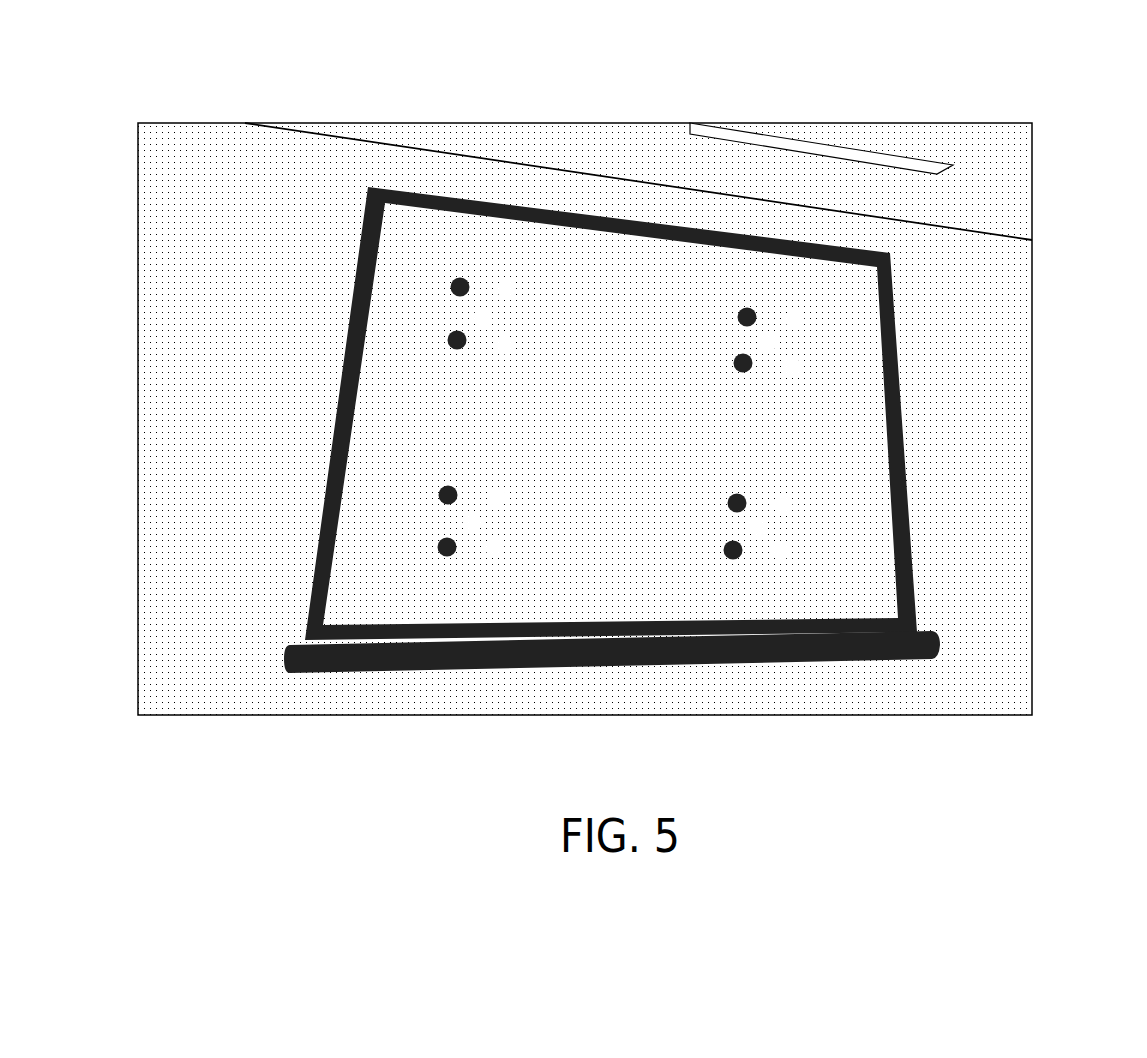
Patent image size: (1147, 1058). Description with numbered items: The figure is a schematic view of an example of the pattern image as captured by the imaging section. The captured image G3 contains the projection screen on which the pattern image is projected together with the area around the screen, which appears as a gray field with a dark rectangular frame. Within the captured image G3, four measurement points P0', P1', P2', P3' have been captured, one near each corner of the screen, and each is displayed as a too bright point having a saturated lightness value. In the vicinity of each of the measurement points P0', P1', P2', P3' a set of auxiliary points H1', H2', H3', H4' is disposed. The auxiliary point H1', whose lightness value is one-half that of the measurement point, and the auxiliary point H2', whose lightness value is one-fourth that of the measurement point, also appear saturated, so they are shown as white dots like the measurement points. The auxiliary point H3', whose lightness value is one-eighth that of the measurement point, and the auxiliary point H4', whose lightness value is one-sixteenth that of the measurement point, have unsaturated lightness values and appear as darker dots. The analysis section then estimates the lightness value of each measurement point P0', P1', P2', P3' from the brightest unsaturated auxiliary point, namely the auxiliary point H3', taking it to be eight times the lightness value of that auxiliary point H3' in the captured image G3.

The captured image G3 is at (1002, 290).
The auxiliary point H1' is at (694, 401).
The auxiliary point H2' is at (715, 441).
The auxiliary point H3' is at (556, 446).
The auxiliary point H4' is at (541, 404).
The measurement point P0' is at (494, 191).
The measurement point P1' is at (793, 206).
The measurement point P2' is at (773, 649).
The measurement point P3' is at (457, 652).